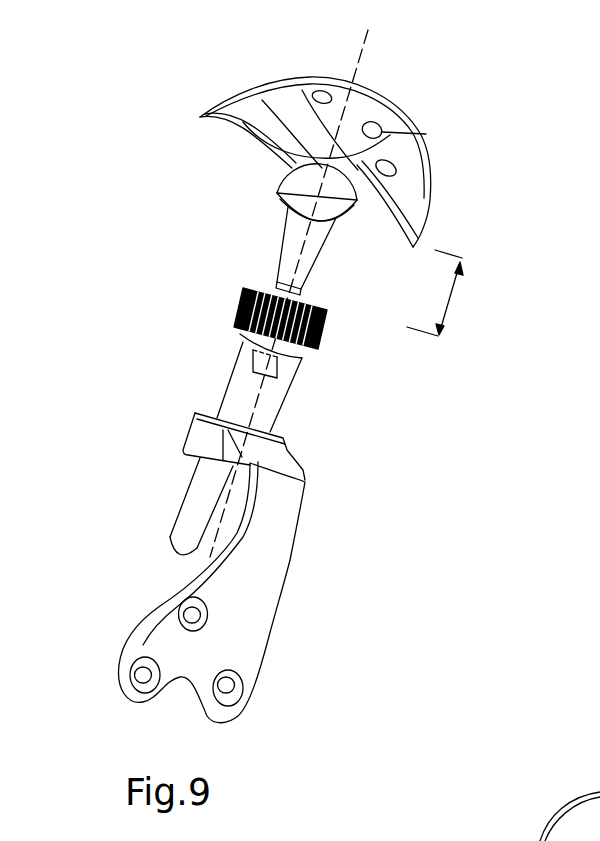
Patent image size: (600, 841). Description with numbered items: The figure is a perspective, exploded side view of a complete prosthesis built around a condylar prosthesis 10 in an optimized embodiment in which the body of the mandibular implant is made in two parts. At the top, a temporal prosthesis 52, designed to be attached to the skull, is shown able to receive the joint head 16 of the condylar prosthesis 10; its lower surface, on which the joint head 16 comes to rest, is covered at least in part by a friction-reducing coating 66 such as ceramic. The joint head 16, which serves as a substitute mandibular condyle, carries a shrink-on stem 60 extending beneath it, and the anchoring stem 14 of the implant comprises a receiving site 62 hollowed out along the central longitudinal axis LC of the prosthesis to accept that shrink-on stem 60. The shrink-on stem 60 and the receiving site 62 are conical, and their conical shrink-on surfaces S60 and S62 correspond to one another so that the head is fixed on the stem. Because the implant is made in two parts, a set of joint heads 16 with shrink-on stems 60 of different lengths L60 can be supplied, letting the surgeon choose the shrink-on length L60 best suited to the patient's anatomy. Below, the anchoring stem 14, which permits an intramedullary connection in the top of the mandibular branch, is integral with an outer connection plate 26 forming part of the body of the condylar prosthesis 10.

The central longitudinal axis LC is at (360, 58).
The temporal prosthesis 52 is at (411, 120).
The joint head 16 is at (292, 168).
The shrink-on stem 60 is at (285, 238).
The conical shrink-on surface of the receiving site S62 is at (320, 247).
The shrink-on length L60 is at (457, 293).
The receiving site 62 is at (302, 358).
The conical shrink-on surface of the shrink-on stem S60 is at (243, 337).
The anchoring stem 14 is at (183, 501).
The outer connection plate 26 is at (278, 592).
The condylar prosthesis 10 is at (110, 565).
The coating 66 is at (537, 840).